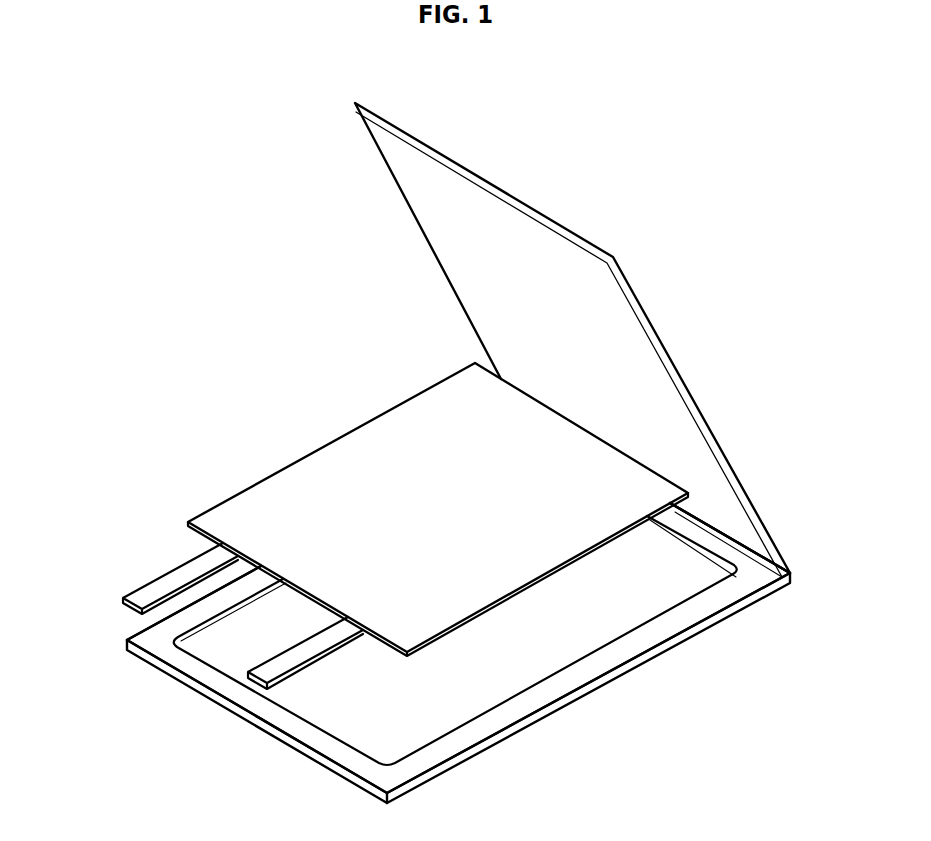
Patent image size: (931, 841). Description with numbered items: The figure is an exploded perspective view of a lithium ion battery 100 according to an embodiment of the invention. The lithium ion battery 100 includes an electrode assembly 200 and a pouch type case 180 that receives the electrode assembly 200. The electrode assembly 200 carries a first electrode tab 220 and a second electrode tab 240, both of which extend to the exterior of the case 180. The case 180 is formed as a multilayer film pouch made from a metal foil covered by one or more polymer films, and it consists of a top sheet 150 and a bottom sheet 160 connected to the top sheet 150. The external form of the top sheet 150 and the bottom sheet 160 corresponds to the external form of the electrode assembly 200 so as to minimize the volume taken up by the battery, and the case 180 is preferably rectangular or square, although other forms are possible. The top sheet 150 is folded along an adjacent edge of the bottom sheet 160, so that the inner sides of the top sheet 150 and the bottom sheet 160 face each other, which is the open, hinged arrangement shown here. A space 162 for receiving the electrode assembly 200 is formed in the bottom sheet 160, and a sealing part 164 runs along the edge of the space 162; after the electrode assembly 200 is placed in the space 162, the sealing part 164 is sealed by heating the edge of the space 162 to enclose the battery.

The lithium ion battery 100 is at (691, 114).
The top sheet 150 is at (693, 394).
The bottom sheet 160 is at (782, 665).
The space 162 is at (620, 627).
The sealing part 164 is at (707, 607).
The pouch type case 180 is at (793, 355).
The electrode assembly 200 is at (323, 458).
The first electrode tab 220 is at (248, 675).
The second electrode tab 240 is at (125, 603).